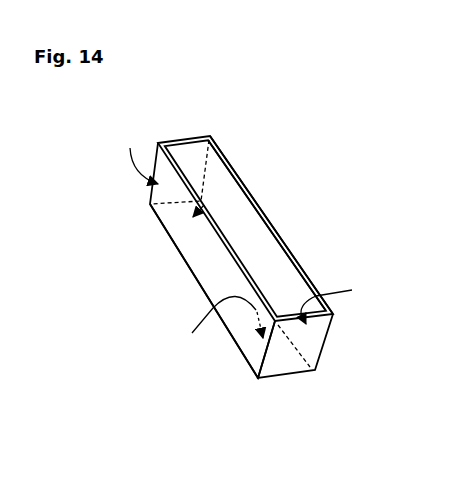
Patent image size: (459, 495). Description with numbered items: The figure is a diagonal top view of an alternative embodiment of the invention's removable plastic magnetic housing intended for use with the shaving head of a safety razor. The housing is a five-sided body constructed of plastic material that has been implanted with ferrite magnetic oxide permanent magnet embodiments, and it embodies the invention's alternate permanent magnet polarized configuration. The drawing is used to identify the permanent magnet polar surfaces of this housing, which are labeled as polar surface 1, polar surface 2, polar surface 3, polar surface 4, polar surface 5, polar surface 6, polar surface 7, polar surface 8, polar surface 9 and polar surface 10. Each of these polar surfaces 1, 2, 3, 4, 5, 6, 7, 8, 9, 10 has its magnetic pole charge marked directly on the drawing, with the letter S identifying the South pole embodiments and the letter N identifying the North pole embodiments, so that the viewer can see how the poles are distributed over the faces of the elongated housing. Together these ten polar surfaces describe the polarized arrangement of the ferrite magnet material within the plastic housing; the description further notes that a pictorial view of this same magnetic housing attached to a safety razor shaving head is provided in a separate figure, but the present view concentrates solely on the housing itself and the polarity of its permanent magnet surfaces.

The permanent magnet polar surface 1 is at (139, 156).
The permanent magnet polar surface 2 is at (193, 151).
The permanent magnet polar surface 3 is at (335, 303).
The permanent magnet polar surface 4 is at (292, 364).
The permanent magnet polar surface 5 is at (260, 350).
The permanent magnet polar surface 6 is at (219, 324).
The permanent magnet polar surface 7 is at (206, 198).
The permanent magnet polar surface 8 is at (193, 251).
The permanent magnet polar surface 9 is at (223, 179).
The permanent magnet polar surface 10 is at (273, 227).